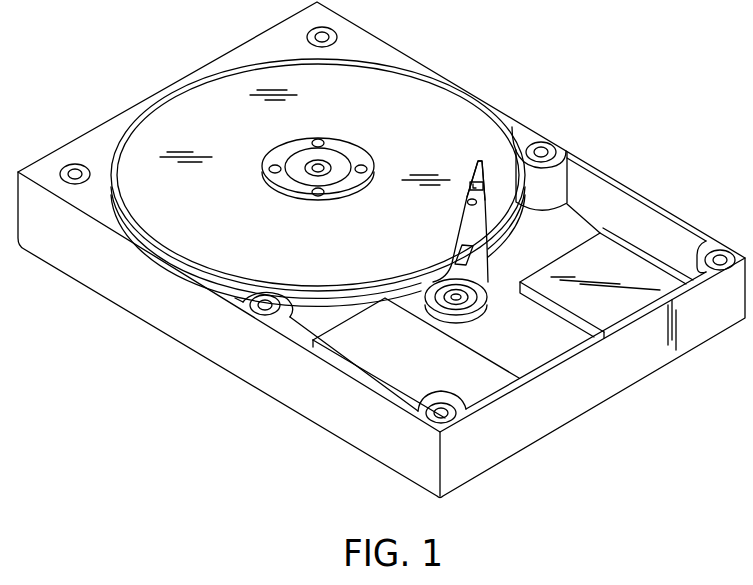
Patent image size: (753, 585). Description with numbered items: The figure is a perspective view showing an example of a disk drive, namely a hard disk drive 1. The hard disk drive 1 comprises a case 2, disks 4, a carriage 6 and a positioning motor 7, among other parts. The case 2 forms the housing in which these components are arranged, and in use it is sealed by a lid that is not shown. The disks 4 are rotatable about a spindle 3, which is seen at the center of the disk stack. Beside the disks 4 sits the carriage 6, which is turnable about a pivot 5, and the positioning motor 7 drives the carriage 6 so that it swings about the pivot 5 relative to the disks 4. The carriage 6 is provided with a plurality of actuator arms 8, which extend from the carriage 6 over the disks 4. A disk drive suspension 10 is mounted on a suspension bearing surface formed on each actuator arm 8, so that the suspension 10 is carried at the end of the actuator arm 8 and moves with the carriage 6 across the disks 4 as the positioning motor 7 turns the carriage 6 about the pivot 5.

The hard disk drive 1 is at (645, 80).
The case 2 is at (197, 337).
The spindle 3 is at (332, 160).
The disks 4 is at (422, 105).
The pivot 5 is at (466, 306).
The carriage 6 is at (475, 272).
The positioning motor 7 is at (372, 382).
The actuator arms 8 is at (484, 196).
The disk drive suspension 10 is at (477, 168).